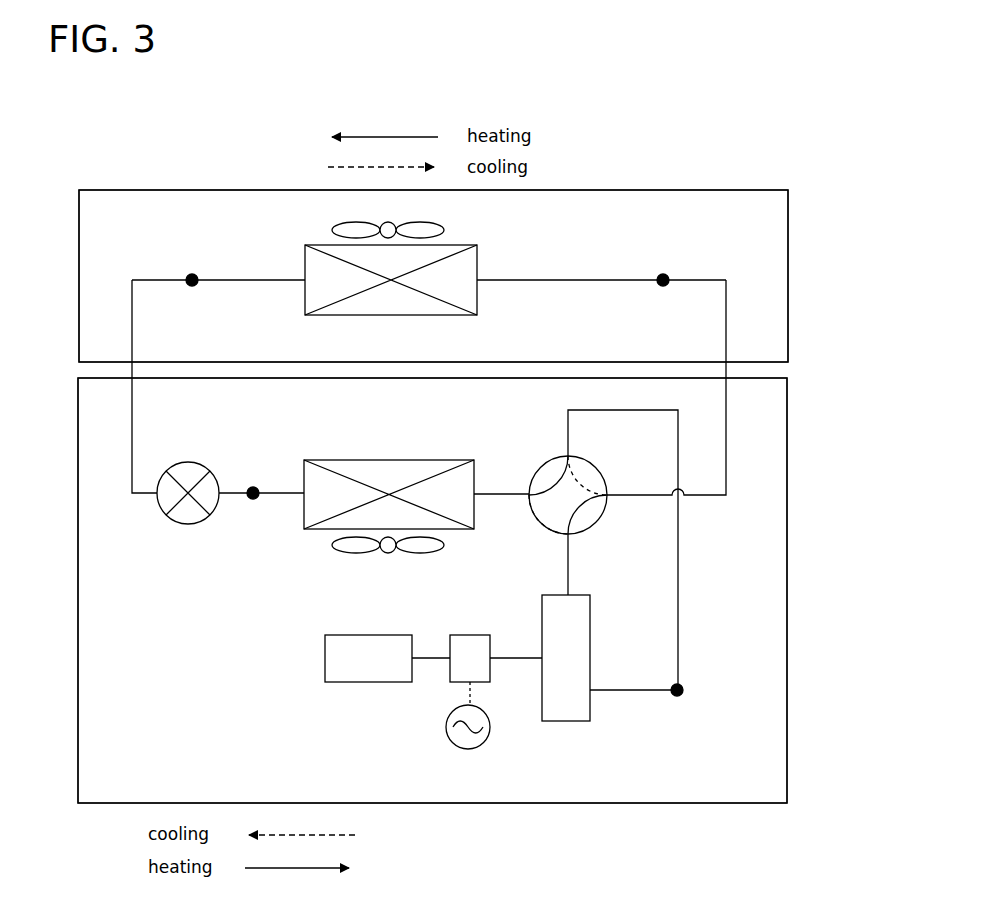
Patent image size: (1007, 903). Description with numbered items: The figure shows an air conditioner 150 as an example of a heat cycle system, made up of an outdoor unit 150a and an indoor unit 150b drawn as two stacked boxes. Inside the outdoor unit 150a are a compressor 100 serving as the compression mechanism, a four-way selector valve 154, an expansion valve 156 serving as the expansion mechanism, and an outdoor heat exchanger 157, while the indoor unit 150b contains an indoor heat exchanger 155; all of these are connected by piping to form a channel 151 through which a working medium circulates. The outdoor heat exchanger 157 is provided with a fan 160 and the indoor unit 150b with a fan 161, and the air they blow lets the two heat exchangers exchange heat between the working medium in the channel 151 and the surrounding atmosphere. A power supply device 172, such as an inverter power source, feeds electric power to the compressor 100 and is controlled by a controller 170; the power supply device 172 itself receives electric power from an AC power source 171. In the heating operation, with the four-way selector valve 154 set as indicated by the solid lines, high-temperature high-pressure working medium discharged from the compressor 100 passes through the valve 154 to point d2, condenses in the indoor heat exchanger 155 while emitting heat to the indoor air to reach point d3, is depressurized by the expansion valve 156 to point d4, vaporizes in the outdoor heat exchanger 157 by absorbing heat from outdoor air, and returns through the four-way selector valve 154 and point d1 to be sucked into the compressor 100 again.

The air conditioner 150 is at (599, 166).
The outdoor unit 150a is at (787, 592).
The indoor unit 150b is at (788, 278).
The channel 151 is at (560, 280).
The four-way selector valve 154 is at (548, 462).
The indoor heat exchanger 155 is at (390, 316).
The expansion valve 156 is at (186, 524).
The outdoor heat exchanger 157 is at (392, 459).
The fan 160 is at (452, 545).
The fan 161 is at (452, 231).
The controller 170 is at (370, 635).
The AC power source 171 is at (466, 749).
The power supply device 172 is at (470, 635).
The compressor 100 is at (565, 722).
The point d1 is at (676, 704).
The point d2 is at (662, 270).
The point d3 is at (191, 269).
The point d4 is at (252, 508).